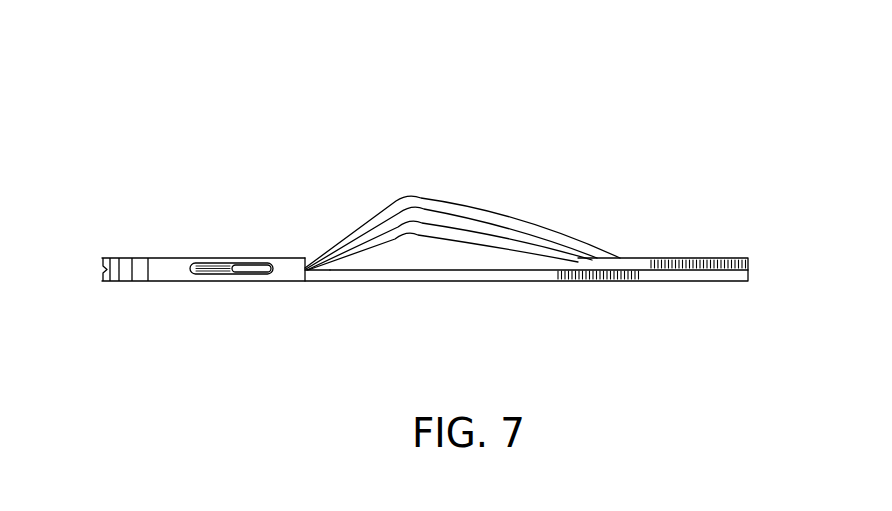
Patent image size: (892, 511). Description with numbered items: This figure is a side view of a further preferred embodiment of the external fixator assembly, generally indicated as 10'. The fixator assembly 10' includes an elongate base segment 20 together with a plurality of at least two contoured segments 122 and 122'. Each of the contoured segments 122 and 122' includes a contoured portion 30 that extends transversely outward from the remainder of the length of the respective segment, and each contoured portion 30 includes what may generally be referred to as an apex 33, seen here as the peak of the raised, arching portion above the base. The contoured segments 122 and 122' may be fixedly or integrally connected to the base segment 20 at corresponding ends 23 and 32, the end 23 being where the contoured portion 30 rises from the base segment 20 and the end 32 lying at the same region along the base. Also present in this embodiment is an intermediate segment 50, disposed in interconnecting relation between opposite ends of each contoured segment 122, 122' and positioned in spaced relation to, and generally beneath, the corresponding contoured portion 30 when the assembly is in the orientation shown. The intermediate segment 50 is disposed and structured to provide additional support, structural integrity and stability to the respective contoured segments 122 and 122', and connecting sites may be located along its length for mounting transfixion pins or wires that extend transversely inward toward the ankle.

The fixator assembly 10' is at (393, 193).
The base segment 20 is at (135, 230).
The end 23 is at (303, 257).
The contoured portion 30 is at (500, 200).
The end 32 is at (317, 282).
The apex 33 is at (405, 210).
The intermediate segment 50 is at (437, 282).
The contoured segment 122 is at (516, 207).
The contoured segment 122' is at (450, 292).